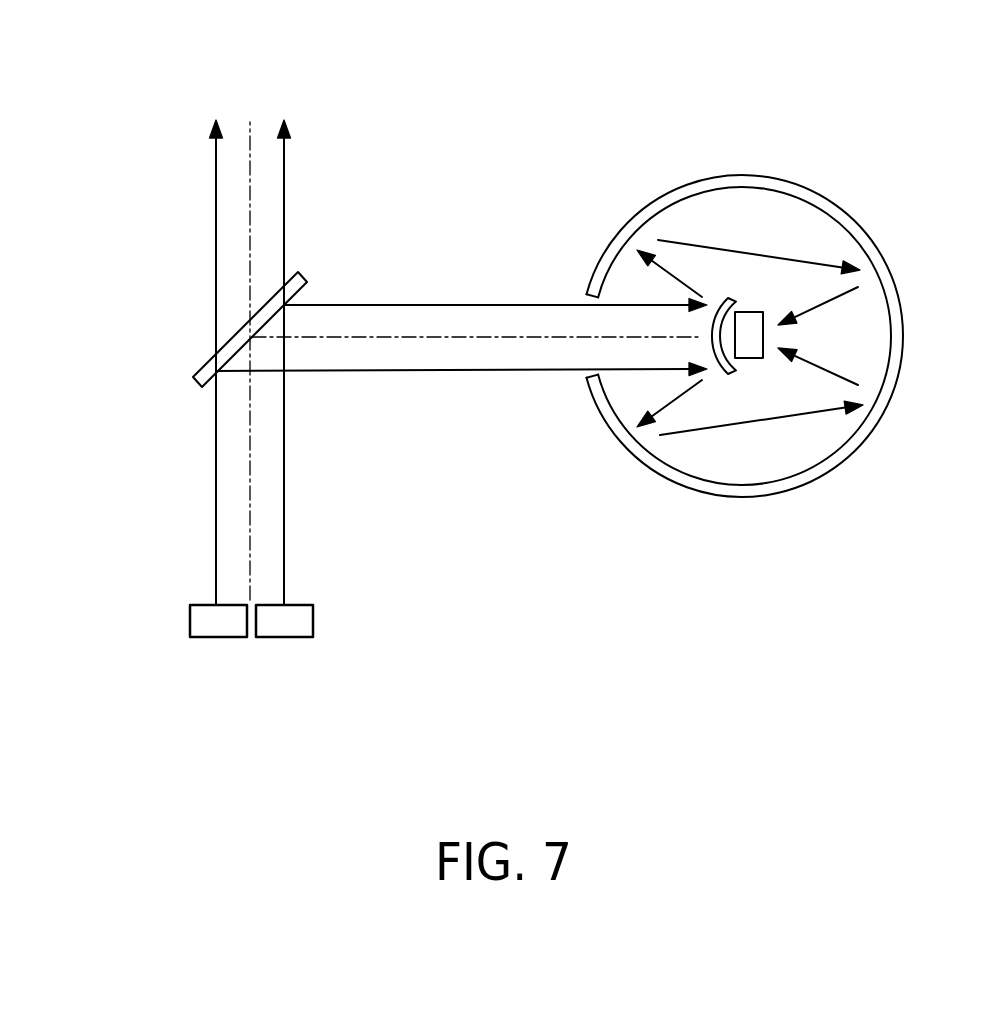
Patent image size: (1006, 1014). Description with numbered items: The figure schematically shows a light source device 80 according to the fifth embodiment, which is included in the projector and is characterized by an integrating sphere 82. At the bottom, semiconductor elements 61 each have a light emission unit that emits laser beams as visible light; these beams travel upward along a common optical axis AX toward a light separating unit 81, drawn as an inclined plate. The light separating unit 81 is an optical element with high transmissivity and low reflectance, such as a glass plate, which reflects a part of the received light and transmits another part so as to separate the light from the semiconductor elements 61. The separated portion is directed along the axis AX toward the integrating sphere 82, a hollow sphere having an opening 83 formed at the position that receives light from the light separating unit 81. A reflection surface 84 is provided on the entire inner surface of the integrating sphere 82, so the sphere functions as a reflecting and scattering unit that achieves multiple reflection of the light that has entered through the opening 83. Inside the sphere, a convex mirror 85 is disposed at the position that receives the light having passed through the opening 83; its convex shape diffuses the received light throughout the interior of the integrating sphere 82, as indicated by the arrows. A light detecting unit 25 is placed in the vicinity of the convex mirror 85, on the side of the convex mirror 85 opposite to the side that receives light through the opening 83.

The light source device 80 is at (424, 106).
The light separating unit 81 is at (205, 369).
The integrating sphere 82 is at (739, 297).
The opening 83 is at (590, 298).
The reflection surface 84 is at (832, 212).
The convex mirror 85 is at (723, 375).
The light detecting unit 25 is at (763, 333).
The semiconductor elements 61 is at (223, 637).
The optical axis AX is at (467, 343).